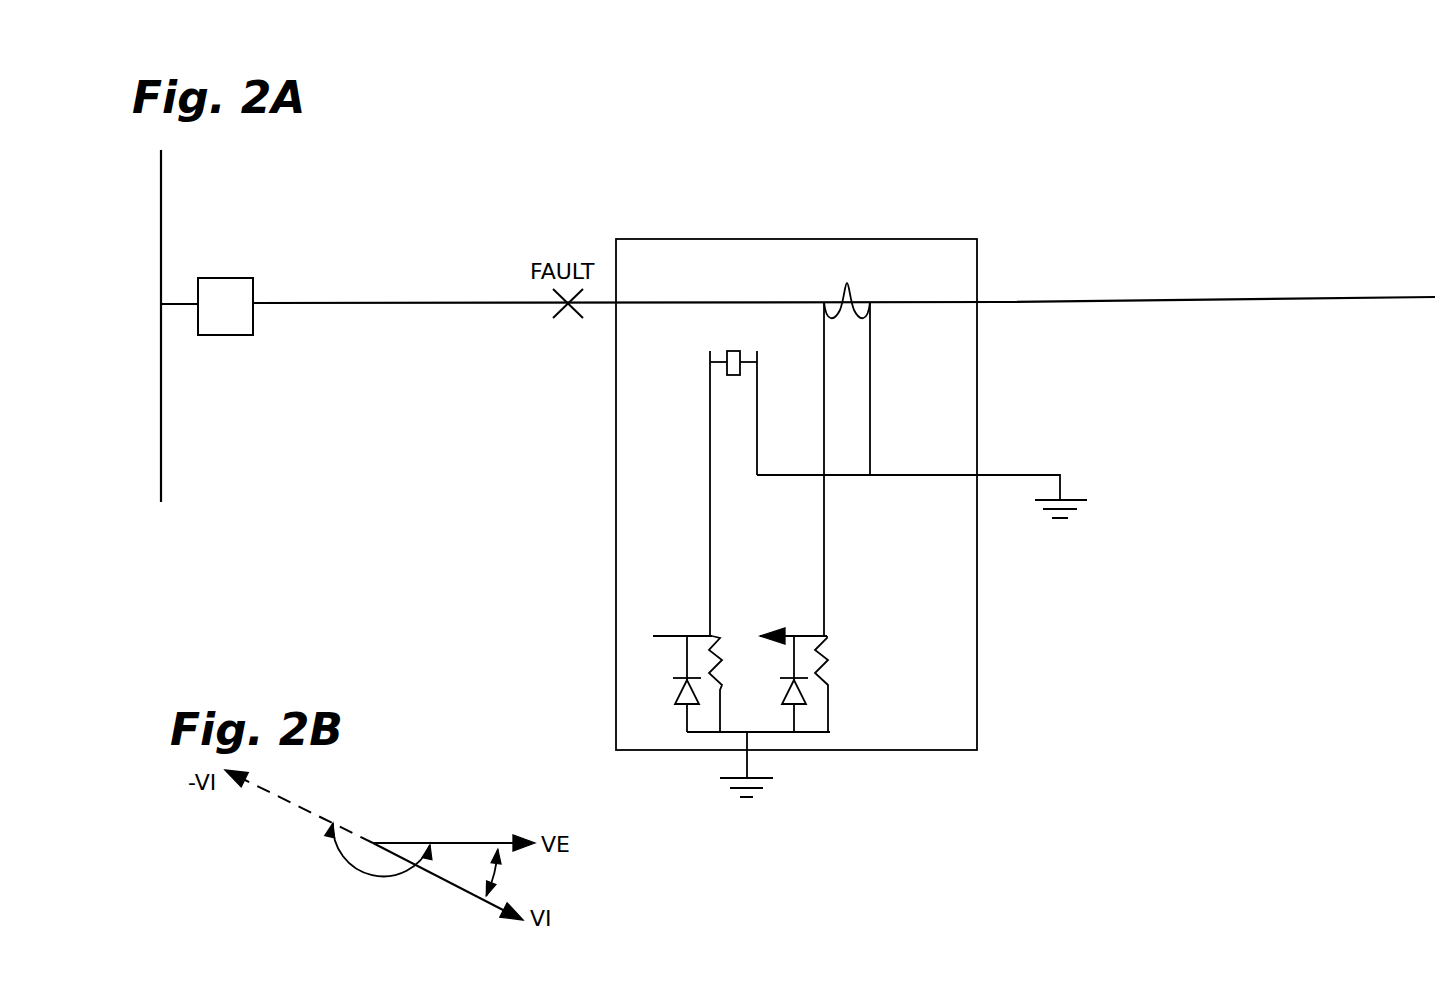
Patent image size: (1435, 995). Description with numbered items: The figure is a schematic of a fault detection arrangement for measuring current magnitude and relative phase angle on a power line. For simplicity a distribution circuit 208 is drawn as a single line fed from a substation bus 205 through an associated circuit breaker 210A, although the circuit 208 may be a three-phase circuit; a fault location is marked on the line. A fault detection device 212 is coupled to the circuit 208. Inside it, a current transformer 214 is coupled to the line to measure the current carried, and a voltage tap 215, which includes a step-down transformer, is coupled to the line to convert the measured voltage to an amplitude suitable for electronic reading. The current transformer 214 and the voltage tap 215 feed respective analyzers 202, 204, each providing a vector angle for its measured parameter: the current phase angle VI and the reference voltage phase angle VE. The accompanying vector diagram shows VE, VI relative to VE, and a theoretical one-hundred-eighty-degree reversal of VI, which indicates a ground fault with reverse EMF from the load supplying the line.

The analyzer 202 is at (850, 695).
The analyzer 204 is at (645, 665).
The substation bus 205 is at (161, 430).
The distribution circuit 208 is at (360, 303).
The circuit breaker 210A is at (222, 278).
The fault detection device 212 is at (933, 239).
The current transformer 214 is at (847, 283).
The voltage tap 215 is at (710, 362).